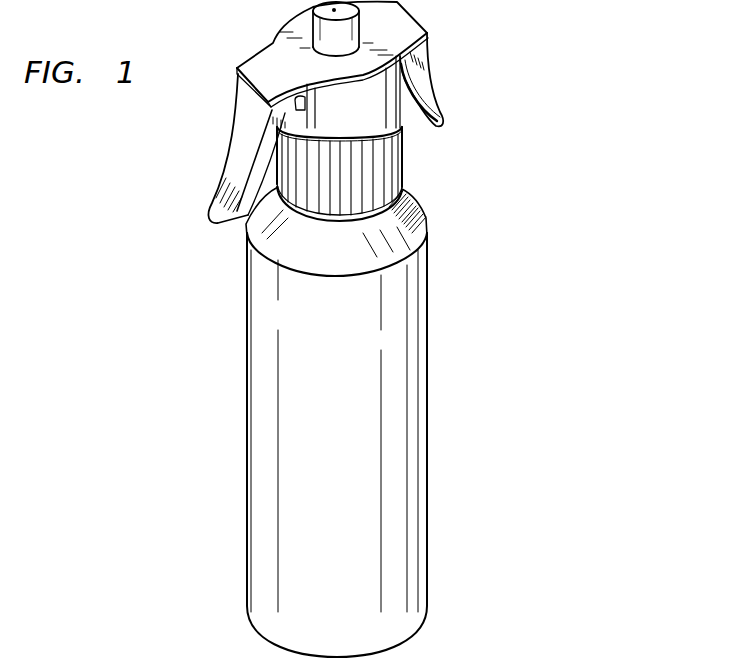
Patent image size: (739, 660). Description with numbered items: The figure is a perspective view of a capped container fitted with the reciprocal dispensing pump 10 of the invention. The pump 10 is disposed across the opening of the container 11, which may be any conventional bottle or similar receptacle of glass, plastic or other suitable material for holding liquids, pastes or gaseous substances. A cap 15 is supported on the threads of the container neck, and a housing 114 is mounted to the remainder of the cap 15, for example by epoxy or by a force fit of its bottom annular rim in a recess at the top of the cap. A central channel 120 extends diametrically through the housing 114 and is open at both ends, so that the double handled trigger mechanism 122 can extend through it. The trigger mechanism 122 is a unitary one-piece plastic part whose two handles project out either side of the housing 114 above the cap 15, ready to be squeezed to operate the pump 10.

The reciprocal dispensing pump 10 is at (370, 116).
The container 11 is at (439, 386).
The cap 15 is at (407, 172).
The housing 114 is at (360, 113).
The central channel 120 is at (305, 98).
The double handled trigger mechanism 122 is at (490, 60).